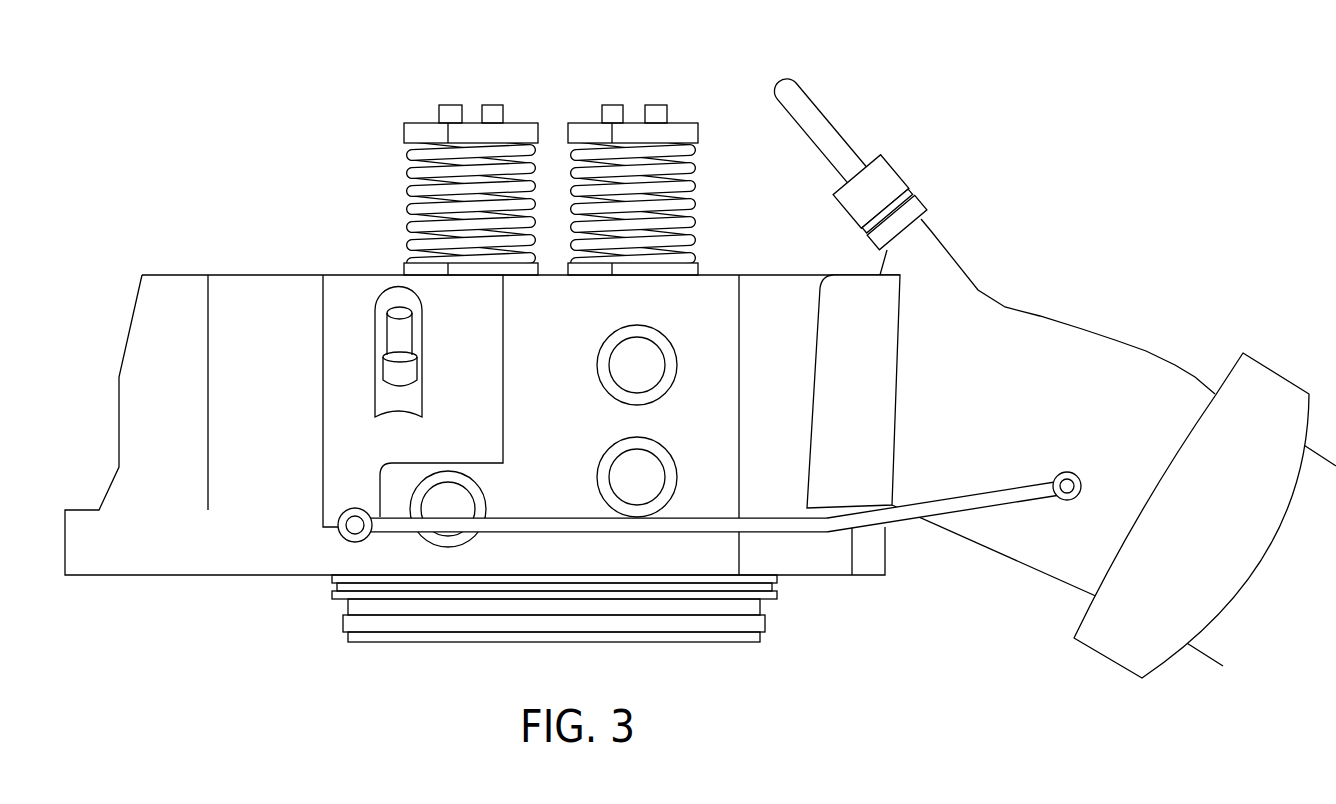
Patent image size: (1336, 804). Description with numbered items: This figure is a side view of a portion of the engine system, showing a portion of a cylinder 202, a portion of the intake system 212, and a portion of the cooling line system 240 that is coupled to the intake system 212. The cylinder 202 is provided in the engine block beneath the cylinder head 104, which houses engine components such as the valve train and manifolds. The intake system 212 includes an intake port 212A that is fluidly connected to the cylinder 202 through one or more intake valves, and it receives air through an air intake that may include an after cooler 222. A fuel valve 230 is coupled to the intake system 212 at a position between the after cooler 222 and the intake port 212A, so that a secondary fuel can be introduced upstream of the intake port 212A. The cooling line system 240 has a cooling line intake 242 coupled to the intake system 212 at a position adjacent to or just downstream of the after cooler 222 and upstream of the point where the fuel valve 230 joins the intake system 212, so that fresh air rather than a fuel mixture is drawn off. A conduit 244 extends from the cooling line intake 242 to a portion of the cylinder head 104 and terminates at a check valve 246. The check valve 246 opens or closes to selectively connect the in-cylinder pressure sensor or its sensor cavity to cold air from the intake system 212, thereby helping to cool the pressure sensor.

The cylinder head 104 is at (187, 548).
The cylinder 202 is at (345, 620).
The intake system 212 is at (1108, 291).
The intake port 212A is at (840, 262).
The after cooler 222 is at (1158, 662).
The fuel valve 230 is at (896, 165).
The cooling line system 240 is at (684, 570).
The cooling line intake 242 is at (1065, 500).
The conduit 244 is at (757, 521).
The check valve 246 is at (338, 530).